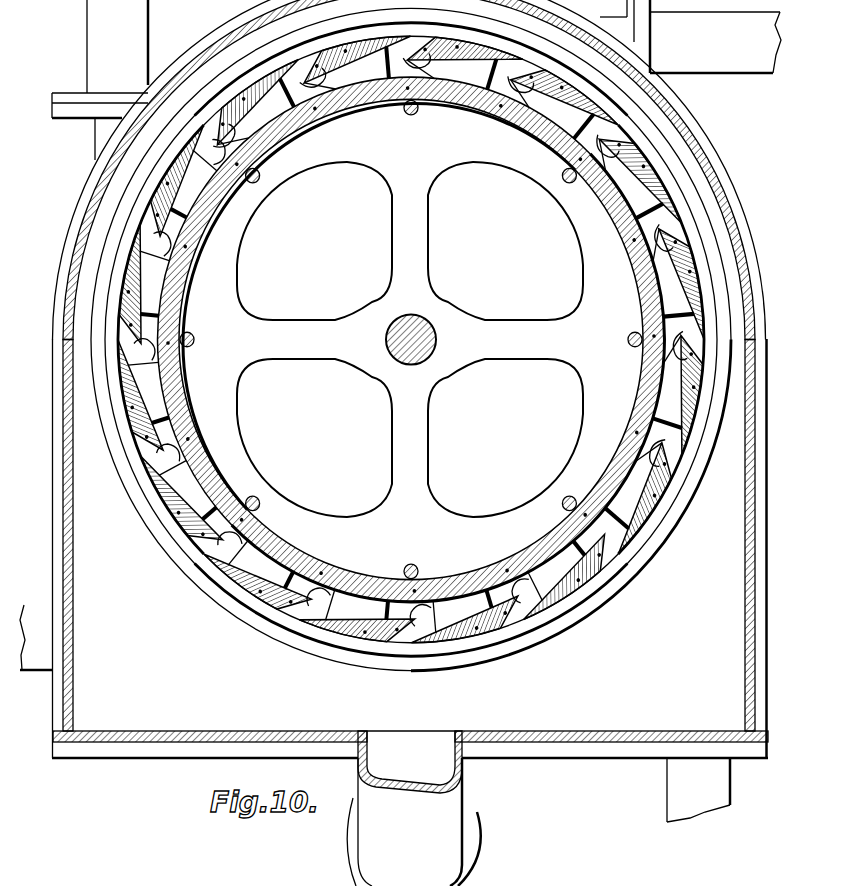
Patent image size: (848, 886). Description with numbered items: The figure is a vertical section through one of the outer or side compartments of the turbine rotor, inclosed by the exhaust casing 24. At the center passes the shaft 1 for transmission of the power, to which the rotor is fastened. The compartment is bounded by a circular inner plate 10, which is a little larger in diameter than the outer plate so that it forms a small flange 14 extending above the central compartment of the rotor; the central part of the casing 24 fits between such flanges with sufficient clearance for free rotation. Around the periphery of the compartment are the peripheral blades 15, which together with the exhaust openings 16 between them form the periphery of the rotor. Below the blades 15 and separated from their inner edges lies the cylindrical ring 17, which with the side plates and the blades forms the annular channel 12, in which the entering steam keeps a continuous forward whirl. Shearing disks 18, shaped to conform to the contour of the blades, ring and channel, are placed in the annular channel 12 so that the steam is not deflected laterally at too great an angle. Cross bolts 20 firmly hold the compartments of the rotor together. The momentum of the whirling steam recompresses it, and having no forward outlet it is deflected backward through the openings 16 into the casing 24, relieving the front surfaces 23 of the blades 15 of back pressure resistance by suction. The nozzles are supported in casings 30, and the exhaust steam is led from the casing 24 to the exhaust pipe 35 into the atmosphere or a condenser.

The shaft 1 is at (386, 341).
The inner plates 10 is at (423, 230).
The annular channels 12 is at (520, 102).
The flanges 14 is at (243, 66).
The peripheral blades 15 is at (140, 272).
The exhaust openings 16 is at (150, 250).
The cylindrical rings 17 is at (476, 95).
The shearing disks 18 is at (366, 90).
The cross bolts 20 is at (410, 113).
The front surfaces 23 is at (157, 352).
The casing 24 is at (70, 263).
The casings 30 is at (95, 4).
The exhaust pipe 35 is at (452, 834).